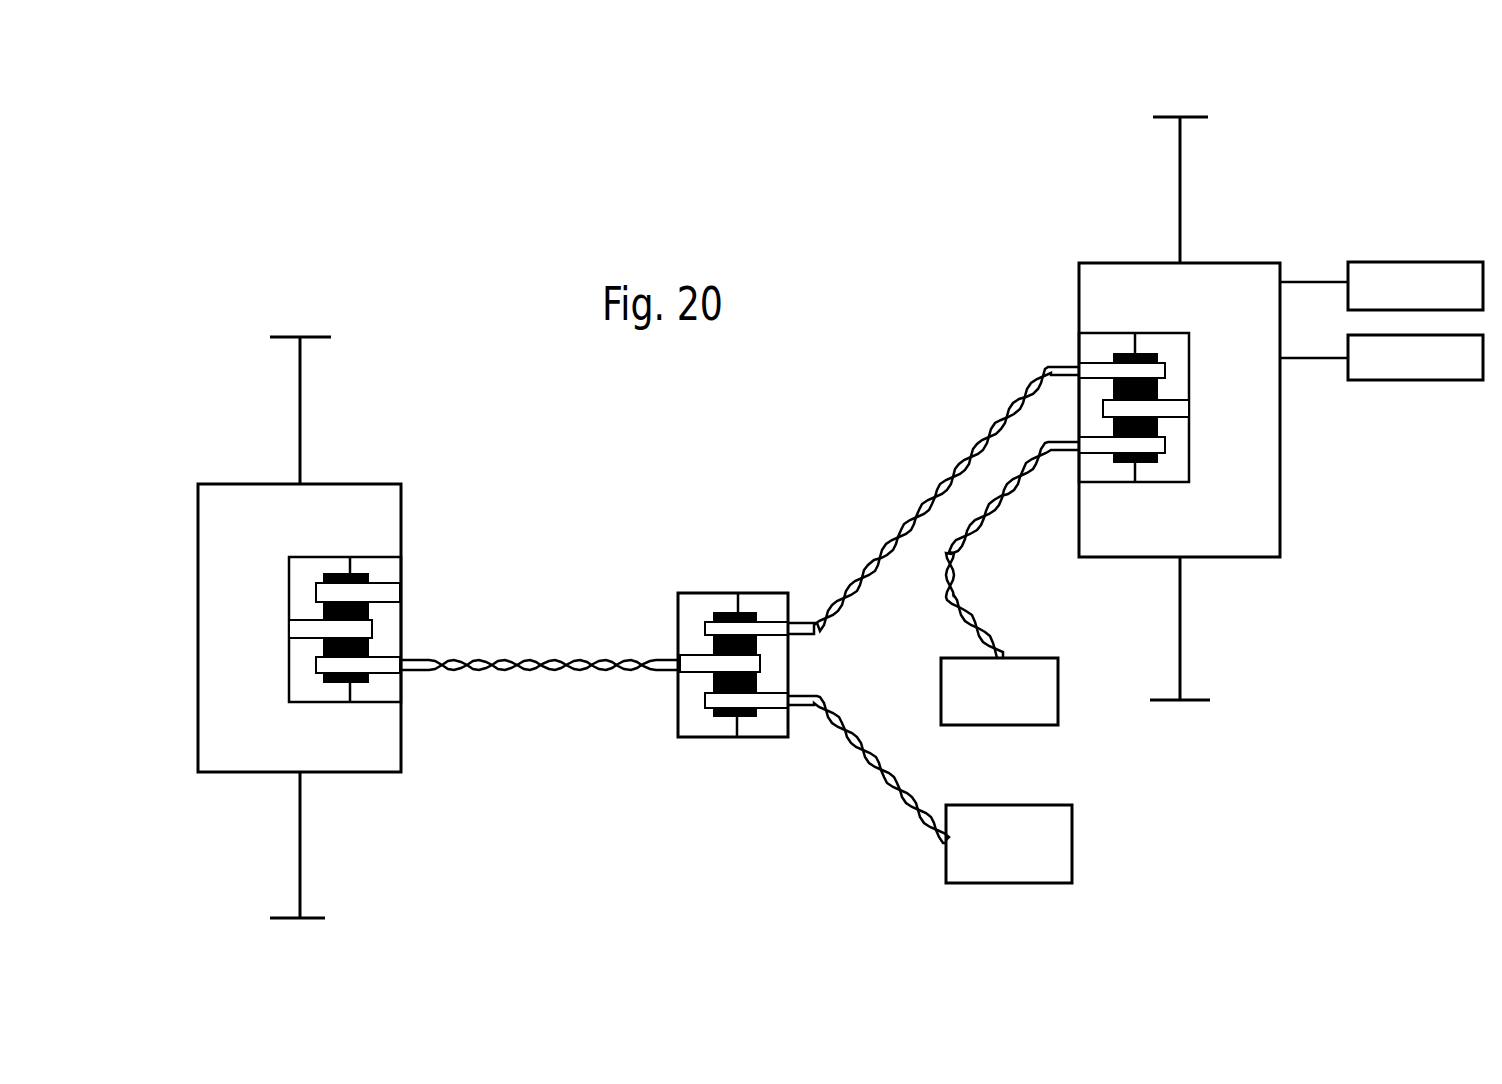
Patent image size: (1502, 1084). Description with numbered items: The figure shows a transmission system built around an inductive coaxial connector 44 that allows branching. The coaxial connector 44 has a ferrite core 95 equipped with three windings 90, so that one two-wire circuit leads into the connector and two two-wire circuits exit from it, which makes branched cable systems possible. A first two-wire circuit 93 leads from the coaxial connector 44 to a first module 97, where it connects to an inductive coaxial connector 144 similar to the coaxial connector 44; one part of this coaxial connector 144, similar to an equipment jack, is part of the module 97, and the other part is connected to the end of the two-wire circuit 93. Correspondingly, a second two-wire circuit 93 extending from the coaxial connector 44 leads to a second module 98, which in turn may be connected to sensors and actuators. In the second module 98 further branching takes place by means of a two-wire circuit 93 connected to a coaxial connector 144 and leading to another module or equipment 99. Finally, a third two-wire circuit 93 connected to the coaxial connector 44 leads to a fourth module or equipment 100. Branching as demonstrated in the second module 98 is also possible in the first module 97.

The inductive coaxial connector 44 is at (720, 593).
The windings 90 is at (377, 665).
The two-wire circuit 93 is at (578, 670).
The cylindrical core 95 is at (748, 612).
The first module 97 is at (375, 500).
The second module 98 is at (1262, 531).
The module or equipment 99 is at (975, 703).
The fourth module or equipment 100 is at (1015, 862).
The inductive coaxial connector 144 is at (386, 690).